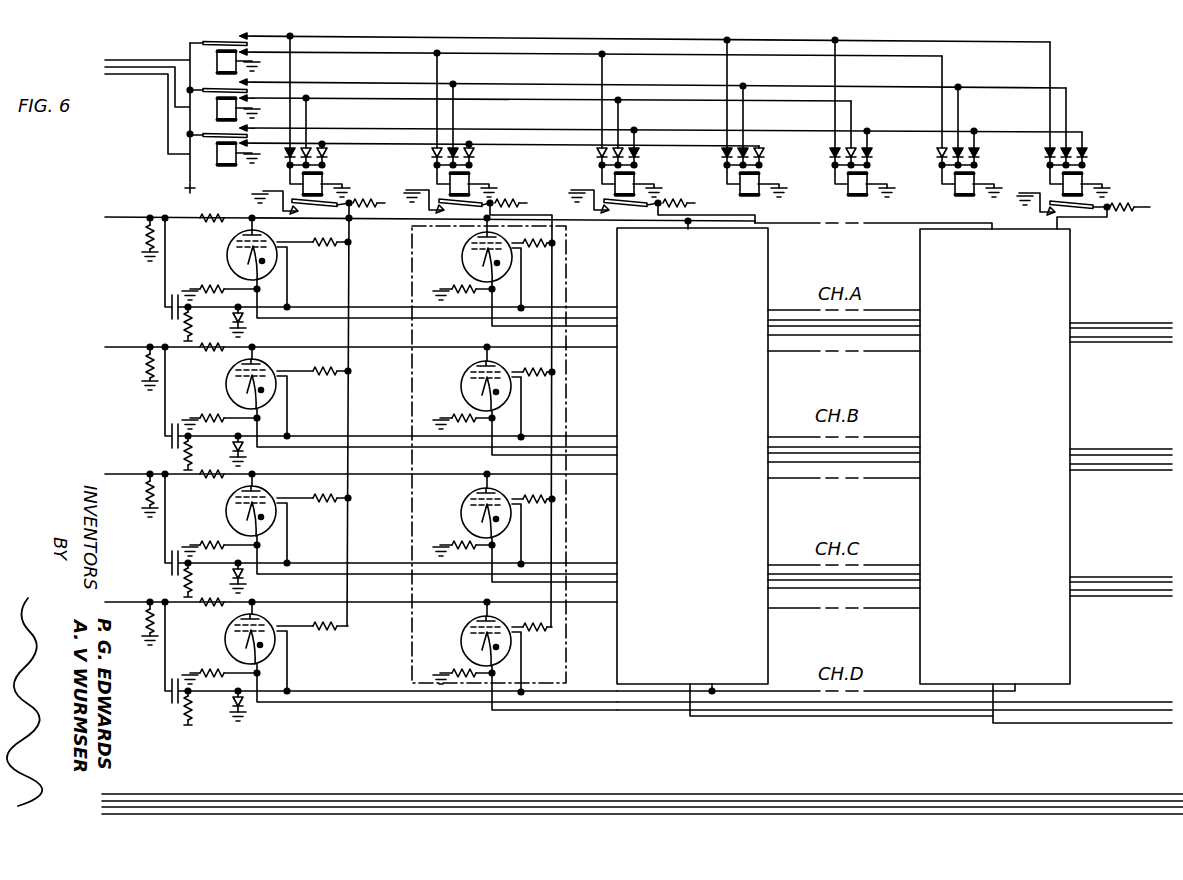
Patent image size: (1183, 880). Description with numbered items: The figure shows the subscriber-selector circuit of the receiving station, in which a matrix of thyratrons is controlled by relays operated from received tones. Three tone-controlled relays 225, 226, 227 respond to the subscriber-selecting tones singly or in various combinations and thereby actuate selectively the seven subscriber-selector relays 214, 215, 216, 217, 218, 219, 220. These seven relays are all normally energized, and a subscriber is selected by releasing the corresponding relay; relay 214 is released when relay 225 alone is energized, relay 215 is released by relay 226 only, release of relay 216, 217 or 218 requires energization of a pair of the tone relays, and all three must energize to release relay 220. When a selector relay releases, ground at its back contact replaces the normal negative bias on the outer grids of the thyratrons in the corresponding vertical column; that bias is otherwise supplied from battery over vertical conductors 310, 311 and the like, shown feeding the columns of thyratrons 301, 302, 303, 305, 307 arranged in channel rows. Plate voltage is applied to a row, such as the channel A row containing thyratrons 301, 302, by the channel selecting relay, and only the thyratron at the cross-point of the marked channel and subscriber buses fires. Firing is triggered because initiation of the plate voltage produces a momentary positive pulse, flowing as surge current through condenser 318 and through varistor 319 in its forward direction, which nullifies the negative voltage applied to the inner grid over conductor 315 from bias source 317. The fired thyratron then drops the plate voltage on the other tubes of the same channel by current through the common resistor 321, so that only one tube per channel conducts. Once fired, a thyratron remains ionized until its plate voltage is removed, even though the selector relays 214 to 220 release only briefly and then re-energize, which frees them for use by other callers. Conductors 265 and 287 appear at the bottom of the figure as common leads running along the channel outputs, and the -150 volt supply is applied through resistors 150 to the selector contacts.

The negative 150 volt supply resistor 150 is at (763, 195).
The subscriber-selector relay 214 is at (319, 186).
The subscriber-selector relay 215 is at (468, 186).
The subscriber-selector relay 216 is at (633, 186).
The subscriber-selector relay 217 is at (758, 186).
The subscriber-selector relay 218 is at (866, 186).
The subscriber-selector relay 219 is at (973, 186).
The subscriber-selector relay 220 is at (1081, 186).
The tone-controlled relay 225 is at (237, 58).
The tone-controlled relay 226 is at (237, 105).
The tone-controlled relay 227 is at (223, 165).
The conductor 265 is at (420, 794).
The conductor 287 is at (505, 801).
The thyratron 301 is at (228, 266).
The thyratron 302 is at (463, 262).
The gas tube 303 is at (227, 384).
The gas tube 305 is at (229, 516).
The gas tube 307 is at (228, 646).
The vertical conductor 310 is at (350, 269).
The vertical conductor 311 is at (556, 269).
The conductor 315 is at (400, 308).
The bias source 317 is at (183, 328).
The condenser 318 is at (172, 299).
The varistor 319 is at (246, 323).
The common resistor 321 is at (211, 226).